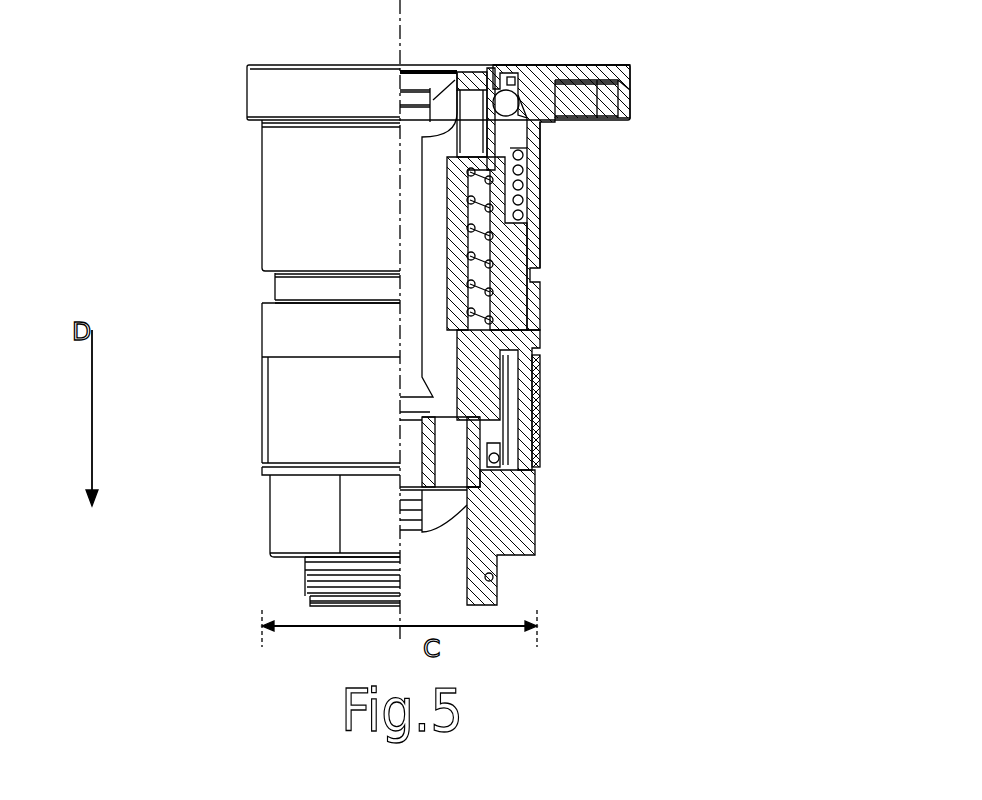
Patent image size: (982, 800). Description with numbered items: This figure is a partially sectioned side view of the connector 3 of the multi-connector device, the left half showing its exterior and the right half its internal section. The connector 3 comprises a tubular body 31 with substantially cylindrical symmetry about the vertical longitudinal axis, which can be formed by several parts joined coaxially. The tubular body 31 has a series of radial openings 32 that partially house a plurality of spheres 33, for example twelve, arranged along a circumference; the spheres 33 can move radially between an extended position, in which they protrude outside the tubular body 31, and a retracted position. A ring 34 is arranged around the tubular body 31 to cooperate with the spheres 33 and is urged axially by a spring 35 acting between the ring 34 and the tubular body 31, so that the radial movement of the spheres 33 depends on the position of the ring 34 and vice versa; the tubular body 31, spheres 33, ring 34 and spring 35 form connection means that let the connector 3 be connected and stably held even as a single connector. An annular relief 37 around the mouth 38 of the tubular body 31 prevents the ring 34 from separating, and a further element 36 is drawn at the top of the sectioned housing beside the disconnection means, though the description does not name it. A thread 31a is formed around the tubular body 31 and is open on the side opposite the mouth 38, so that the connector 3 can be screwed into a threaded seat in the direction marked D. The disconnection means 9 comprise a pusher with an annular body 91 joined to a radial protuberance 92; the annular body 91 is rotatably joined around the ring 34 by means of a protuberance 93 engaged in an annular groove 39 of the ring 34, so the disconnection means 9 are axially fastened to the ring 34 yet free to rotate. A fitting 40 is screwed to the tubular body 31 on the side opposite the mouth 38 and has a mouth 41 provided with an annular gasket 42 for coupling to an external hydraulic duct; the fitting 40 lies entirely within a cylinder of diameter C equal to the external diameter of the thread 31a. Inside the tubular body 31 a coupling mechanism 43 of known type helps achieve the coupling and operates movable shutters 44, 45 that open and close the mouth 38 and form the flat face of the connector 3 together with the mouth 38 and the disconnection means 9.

The disconnection means 9 is at (237, 31).
The connector 3 is at (558, 590).
The annular body 91 is at (276, 92).
The radial protuberance 92 is at (627, 85).
The protuberance 93 is at (530, 103).
The tubular body 31 is at (287, 330).
The thread 31a is at (318, 420).
The radial openings 32 is at (523, 133).
The spheres 33 is at (505, 108).
The ring 34 is at (312, 212).
The spring 35 is at (515, 206).
The housing top 36 is at (580, 65).
The annular relief 37 is at (518, 92).
The mouth 38 is at (512, 78).
The annular groove 39 is at (538, 118).
The fitting 40 is at (527, 517).
The mouth 41 is at (313, 602).
The annular gasket 42 is at (317, 587).
The coupling mechanism 43 is at (440, 320).
The movable shutter 44 is at (412, 68).
The movable shutter 45 is at (472, 83).